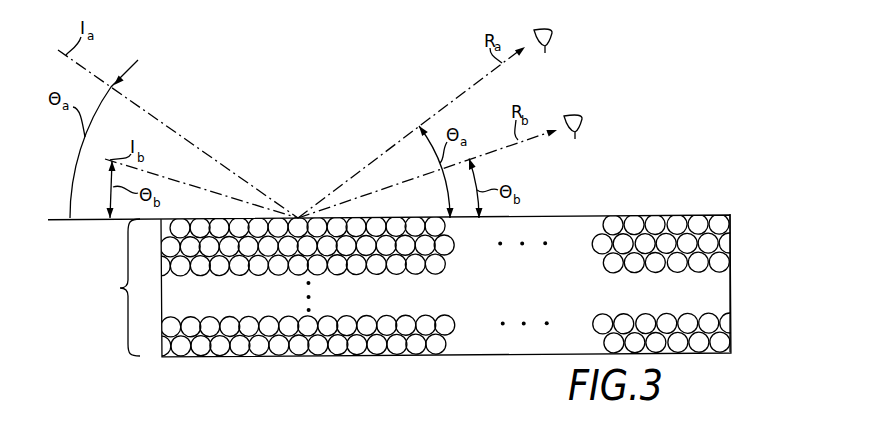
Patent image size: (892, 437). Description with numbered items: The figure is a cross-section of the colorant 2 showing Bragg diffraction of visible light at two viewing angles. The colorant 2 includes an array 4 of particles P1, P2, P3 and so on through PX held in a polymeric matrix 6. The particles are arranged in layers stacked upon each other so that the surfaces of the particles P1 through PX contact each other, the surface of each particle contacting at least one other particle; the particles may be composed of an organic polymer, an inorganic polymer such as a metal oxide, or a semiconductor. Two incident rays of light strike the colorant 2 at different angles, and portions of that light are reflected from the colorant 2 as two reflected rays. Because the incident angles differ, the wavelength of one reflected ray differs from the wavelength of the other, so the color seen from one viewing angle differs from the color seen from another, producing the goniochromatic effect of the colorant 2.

The colorant 2 is at (672, 204).
The array 4 is at (119, 287).
The polymeric matrix 6 is at (723, 288).
The particle P1 is at (444, 227).
The particle P2 is at (453, 252).
The particle P3 is at (443, 270).
The particle PX is at (442, 345).